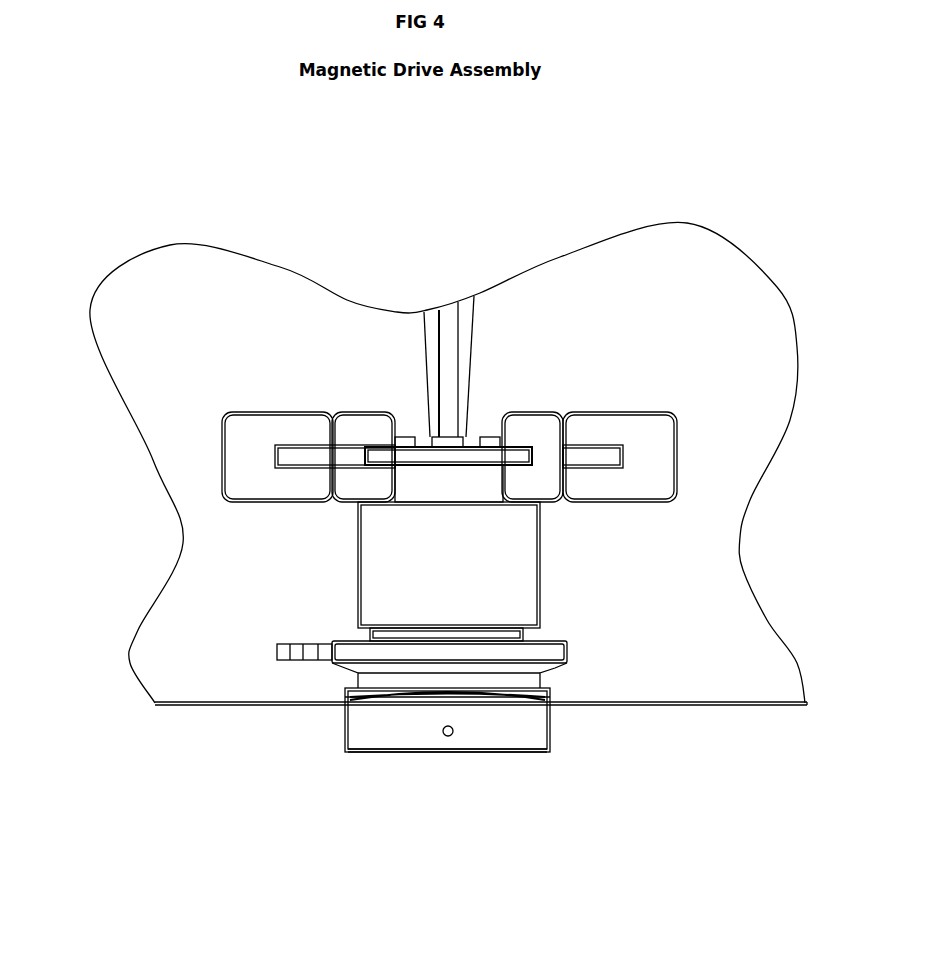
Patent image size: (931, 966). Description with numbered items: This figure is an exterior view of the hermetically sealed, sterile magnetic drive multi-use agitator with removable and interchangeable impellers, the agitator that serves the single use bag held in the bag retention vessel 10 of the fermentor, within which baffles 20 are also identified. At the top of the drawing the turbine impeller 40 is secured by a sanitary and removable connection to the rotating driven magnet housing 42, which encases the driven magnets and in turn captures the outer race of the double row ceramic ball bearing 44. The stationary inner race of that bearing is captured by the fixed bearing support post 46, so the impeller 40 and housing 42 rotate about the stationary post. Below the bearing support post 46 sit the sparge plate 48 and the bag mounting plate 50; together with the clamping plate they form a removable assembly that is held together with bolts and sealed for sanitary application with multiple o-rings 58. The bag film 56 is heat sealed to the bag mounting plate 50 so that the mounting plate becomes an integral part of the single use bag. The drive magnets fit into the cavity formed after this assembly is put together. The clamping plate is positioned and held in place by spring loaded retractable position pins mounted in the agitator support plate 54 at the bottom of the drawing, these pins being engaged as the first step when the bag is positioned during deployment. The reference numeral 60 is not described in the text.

The bag retention vessel 10 is at (227, 705).
The baffles 20 is at (423, 333).
The impeller 40 is at (618, 412).
The rotating driven magnet housing 42 is at (540, 570).
The ball bearing 44 is at (395, 457).
The bearing support post 46 is at (483, 632).
The sparge plate 48 is at (350, 643).
The bag mounting plate 50 is at (343, 697).
The agitator support plate 54 is at (400, 755).
The bag film 56 is at (737, 703).
The o-rings 58 is at (345, 725).
The bottom plate 60 is at (465, 755).